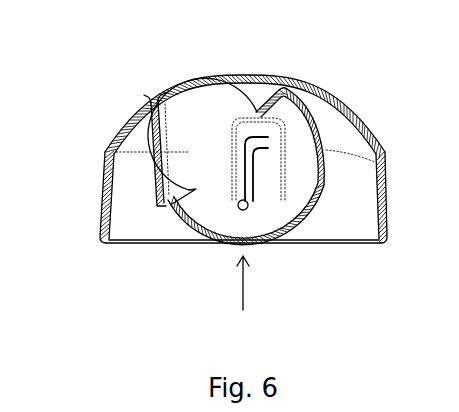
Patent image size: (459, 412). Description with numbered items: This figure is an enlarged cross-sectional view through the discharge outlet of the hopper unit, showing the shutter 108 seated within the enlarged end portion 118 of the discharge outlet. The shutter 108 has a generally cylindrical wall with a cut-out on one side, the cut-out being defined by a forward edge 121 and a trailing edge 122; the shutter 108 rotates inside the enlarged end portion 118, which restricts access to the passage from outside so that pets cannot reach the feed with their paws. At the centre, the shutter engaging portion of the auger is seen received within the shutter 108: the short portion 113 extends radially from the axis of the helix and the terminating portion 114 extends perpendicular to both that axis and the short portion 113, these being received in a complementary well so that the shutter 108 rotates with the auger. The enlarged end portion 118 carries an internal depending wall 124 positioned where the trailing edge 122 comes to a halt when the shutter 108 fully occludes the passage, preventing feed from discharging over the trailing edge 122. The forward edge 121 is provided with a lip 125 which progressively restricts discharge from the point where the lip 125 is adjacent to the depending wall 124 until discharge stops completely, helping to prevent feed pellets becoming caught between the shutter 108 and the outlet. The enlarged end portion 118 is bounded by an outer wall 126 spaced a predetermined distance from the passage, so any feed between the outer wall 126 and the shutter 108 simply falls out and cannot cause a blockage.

The shutter 108 is at (243, 295).
The short portion 113 is at (240, 181).
The terminating portion 114 is at (262, 142).
The enlarged end portion 118 is at (103, 160).
The forward edge 121 is at (280, 98).
The trailing edge 122 is at (177, 206).
The depending wall 124 is at (155, 142).
The lip 125 is at (262, 103).
The outer wall 126 is at (106, 231).